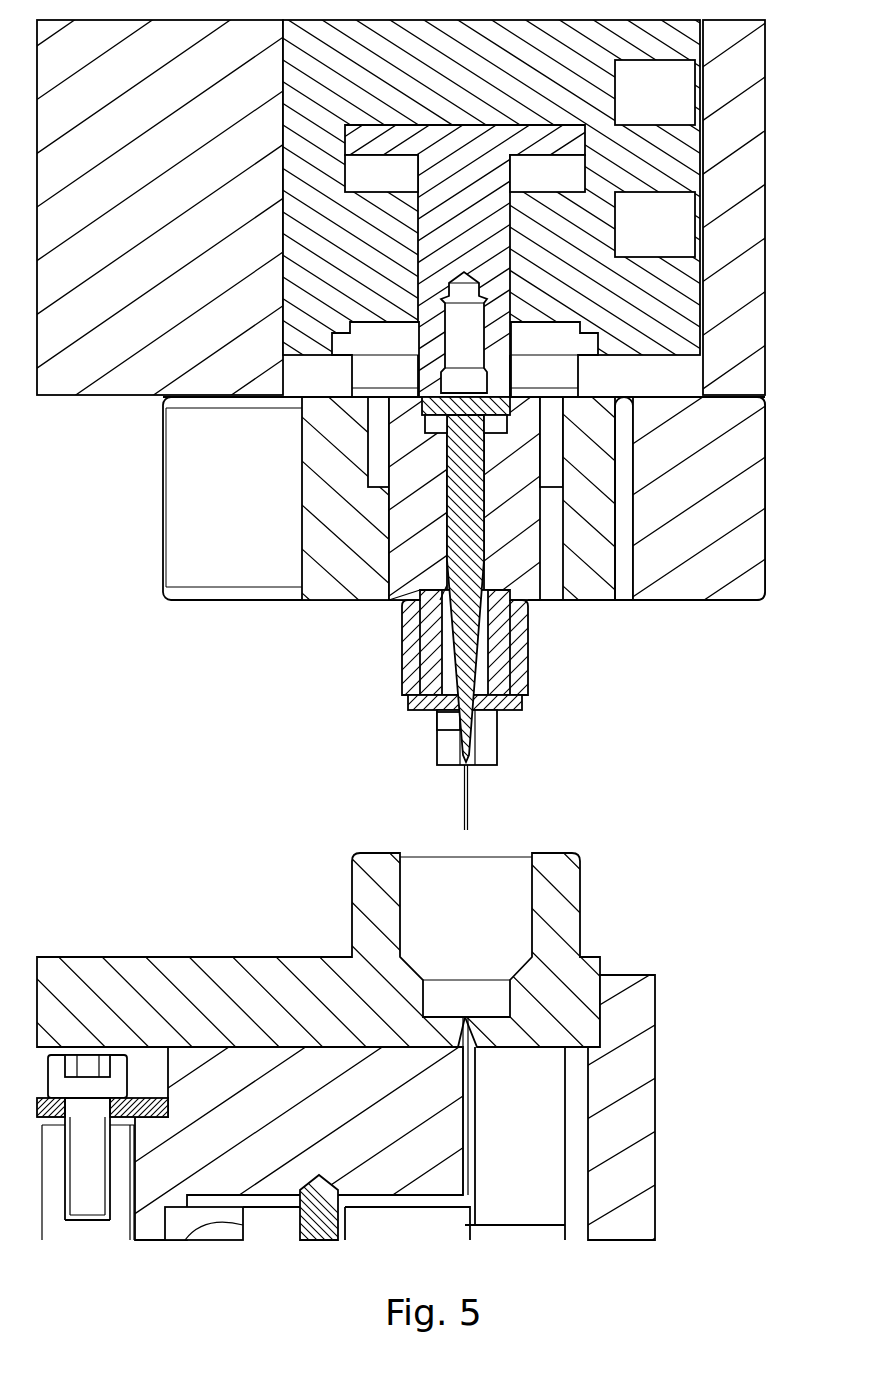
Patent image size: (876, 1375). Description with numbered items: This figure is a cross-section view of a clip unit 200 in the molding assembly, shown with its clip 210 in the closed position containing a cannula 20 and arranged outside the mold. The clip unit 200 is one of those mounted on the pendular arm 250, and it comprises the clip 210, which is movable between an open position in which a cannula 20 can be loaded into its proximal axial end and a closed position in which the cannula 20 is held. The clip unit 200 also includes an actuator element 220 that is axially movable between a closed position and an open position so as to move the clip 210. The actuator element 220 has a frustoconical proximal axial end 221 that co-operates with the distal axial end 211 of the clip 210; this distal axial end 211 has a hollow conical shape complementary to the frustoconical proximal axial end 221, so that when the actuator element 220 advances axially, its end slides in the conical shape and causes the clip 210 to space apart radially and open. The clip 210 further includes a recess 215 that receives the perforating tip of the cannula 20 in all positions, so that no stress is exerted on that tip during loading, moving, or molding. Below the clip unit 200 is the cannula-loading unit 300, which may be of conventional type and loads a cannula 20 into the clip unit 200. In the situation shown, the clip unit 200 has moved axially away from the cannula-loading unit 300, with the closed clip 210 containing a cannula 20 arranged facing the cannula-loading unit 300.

The pendular arm 250 is at (592, 452).
The actuator element 220 is at (462, 495).
The frustoconical proximal axial end 221 is at (445, 578).
The distal axial end 211 is at (592, 602).
The clip unit 200 is at (498, 613).
The recess 215 is at (455, 720).
The clip 210 is at (500, 729).
The cannula 20 is at (478, 796).
The cannula-loading unit 300 is at (648, 962).